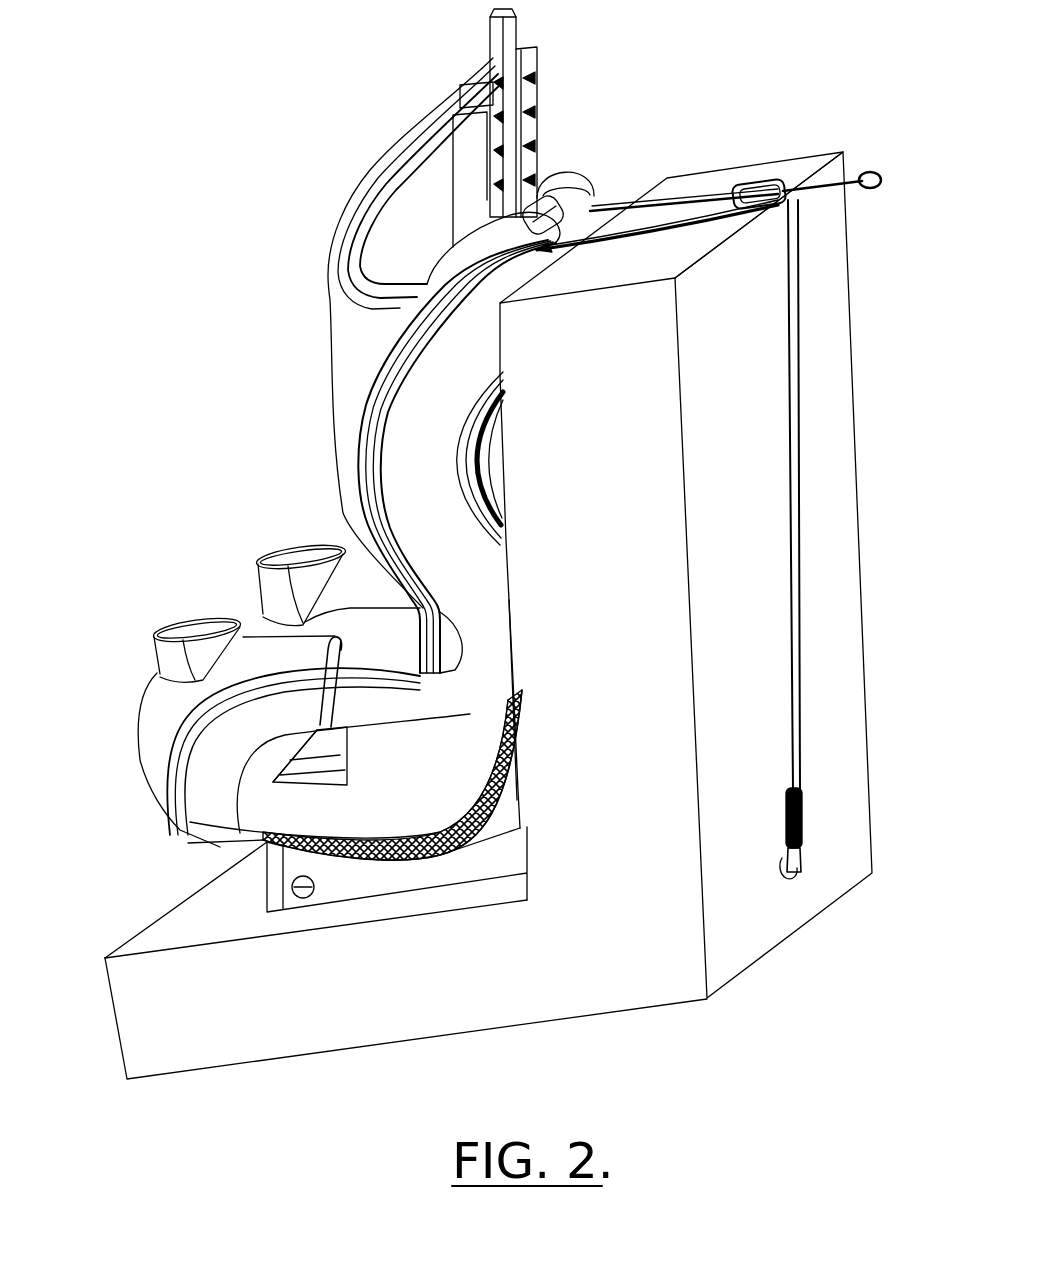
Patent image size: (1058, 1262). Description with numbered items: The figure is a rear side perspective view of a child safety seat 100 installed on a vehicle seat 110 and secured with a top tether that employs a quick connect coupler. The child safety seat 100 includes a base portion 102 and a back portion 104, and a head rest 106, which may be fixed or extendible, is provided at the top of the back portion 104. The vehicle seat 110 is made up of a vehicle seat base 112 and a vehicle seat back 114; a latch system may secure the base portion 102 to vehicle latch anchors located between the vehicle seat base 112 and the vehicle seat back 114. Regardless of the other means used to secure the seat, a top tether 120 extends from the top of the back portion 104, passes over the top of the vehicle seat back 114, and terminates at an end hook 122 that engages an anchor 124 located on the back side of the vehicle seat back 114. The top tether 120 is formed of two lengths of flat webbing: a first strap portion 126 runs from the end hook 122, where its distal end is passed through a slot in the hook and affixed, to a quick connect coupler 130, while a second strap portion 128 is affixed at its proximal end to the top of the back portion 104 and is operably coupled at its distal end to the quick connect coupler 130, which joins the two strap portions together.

The child safety seat 100 is at (150, 247).
The base portion 102 is at (283, 867).
The back portion 104 is at (438, 443).
The head rest 106 is at (388, 150).
The vehicle seat 110 is at (743, 978).
The vehicle seat base 112 is at (423, 1010).
The vehicle seat back 114 is at (693, 175).
The top tether 120 is at (817, 400).
The end hook 122 is at (802, 850).
The anchor 124 is at (782, 862).
The first strap portion 126 is at (795, 595).
The second strap portion 128 is at (635, 200).
The quick connect coupler 130 is at (775, 172).